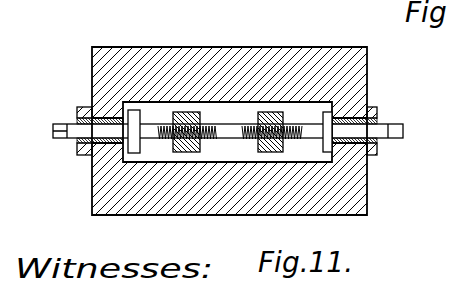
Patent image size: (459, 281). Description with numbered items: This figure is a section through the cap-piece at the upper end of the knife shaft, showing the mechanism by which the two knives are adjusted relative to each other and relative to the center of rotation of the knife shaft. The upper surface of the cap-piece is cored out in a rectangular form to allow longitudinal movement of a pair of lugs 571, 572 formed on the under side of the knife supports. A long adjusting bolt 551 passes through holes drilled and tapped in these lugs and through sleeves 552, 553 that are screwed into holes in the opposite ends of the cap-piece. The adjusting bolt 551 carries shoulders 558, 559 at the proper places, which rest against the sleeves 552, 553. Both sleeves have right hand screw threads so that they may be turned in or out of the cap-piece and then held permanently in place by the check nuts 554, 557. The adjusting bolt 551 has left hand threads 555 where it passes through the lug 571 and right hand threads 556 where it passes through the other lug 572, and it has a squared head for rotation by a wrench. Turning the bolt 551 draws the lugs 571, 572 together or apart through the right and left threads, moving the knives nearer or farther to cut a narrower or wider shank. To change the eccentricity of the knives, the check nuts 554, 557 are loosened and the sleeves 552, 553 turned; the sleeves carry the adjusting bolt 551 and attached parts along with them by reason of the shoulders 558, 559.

The adjusting bolt 551 is at (225, 142).
The sleeve 552 is at (80, 109).
The sleeve 553 is at (389, 119).
The check nut 554 is at (86, 164).
The left hand threads 555 is at (190, 122).
The right hand threads 556 is at (268, 140).
The check nut 557 is at (379, 164).
The shoulder 558 is at (137, 111).
The shoulder 559 is at (367, 78).
The lug 571 is at (183, 118).
The lug 572 is at (266, 118).